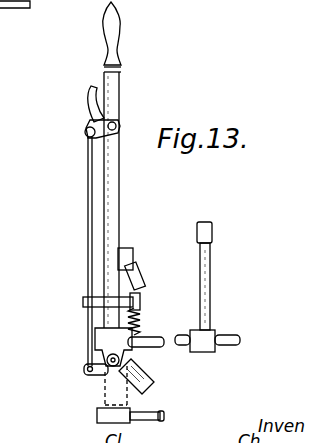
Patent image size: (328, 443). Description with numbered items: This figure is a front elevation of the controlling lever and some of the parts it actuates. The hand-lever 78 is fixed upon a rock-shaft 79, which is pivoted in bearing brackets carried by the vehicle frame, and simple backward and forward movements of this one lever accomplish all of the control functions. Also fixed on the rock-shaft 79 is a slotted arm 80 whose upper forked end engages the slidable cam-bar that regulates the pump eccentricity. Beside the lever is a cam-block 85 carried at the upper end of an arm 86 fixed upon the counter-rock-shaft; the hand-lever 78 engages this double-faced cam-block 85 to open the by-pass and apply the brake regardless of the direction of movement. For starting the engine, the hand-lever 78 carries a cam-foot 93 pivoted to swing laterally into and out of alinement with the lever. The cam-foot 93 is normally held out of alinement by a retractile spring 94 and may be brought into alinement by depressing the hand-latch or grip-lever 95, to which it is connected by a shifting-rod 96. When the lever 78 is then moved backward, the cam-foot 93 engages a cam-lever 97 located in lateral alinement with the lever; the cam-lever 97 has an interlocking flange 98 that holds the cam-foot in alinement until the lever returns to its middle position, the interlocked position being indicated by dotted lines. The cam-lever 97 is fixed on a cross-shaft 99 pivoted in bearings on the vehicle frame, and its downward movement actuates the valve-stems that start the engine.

The hand-lever 78 is at (113, 207).
The hand-latch or grip-lever 95 is at (82, 112).
The shifting-rod 96 is at (68, 251).
The cam-block 85 is at (129, 257).
The arm 86 is at (141, 275).
The retractile spring 94 is at (140, 300).
The rock-shaft 79 is at (144, 340).
The cam-foot 93 is at (147, 380).
The cam-lever 97 is at (97, 410).
The interlocking flange 98 is at (150, 403).
The cross-shaft 99 is at (162, 415).
The slotted arm 80 is at (211, 288).